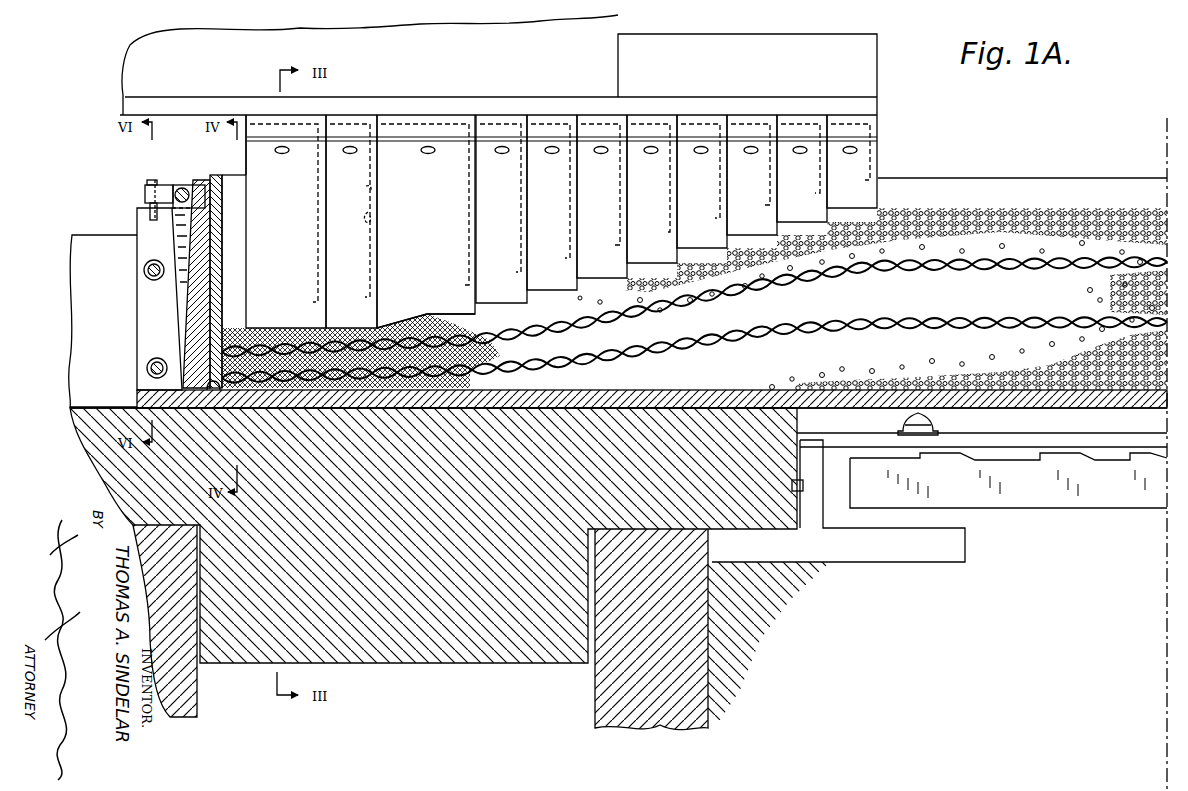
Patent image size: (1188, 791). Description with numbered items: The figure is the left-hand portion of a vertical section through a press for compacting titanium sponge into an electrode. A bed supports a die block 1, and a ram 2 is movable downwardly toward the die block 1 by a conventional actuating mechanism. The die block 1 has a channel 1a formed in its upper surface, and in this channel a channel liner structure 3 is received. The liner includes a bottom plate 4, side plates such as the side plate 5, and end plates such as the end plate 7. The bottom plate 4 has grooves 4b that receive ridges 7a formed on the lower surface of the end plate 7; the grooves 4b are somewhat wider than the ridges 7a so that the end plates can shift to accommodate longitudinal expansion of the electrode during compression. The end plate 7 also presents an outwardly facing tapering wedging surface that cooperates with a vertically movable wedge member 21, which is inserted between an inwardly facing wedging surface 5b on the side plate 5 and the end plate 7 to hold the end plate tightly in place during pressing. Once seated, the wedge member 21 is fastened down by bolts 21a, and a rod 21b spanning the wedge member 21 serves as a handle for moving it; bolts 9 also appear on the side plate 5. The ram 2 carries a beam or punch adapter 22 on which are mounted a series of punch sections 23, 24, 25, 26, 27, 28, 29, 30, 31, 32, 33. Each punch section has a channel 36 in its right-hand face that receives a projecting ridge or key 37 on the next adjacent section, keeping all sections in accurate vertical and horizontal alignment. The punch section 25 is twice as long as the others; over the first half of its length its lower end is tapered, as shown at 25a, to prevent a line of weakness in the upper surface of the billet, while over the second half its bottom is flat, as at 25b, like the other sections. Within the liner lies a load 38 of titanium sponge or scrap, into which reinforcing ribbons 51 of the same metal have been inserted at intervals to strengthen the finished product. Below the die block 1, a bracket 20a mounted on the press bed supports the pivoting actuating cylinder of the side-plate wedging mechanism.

The die block 1 is at (90, 430).
The channel 1a is at (70, 406).
The ram 2 is at (113, 52).
The channel liner structure 3 is at (92, 192).
The bottom plate 4 is at (137, 393).
The grooves 4b is at (206, 394).
The side plate 5 is at (240, 182).
The inwardly facing wedging surface 5b is at (171, 248).
The end plate 7 is at (222, 252).
The ridge / tapering wedging surface 7a is at (210, 180).
The bolts 9 is at (144, 272).
The brackets 20a is at (830, 553).
The wedge member 21 is at (186, 188).
The bolts 21a is at (147, 181).
The rod 21b is at (173, 186).
The beam or punch adapter 22 is at (878, 56).
The punch section 23 is at (292, 185).
The punch section 24 is at (360, 185).
The punch section 25 is at (440, 185).
The tapered lower end 25a is at (407, 322).
The flat bottom end 25b is at (452, 312).
The punch section 26 is at (510, 185).
The punch section 27 is at (560, 185).
The punch section 28 is at (610, 185).
The punch section 29 is at (660, 185).
The punch section 30 is at (710, 185).
The punch section 31 is at (760, 185).
The punch section 32 is at (810, 185).
The punch section 33 is at (860, 185).
The channel 36 is at (366, 186).
The projecting ridge or key 37 is at (370, 214).
The load of sponge or scrap metal 38 is at (913, 212).
The reinforcement ribbons 51 is at (930, 320).